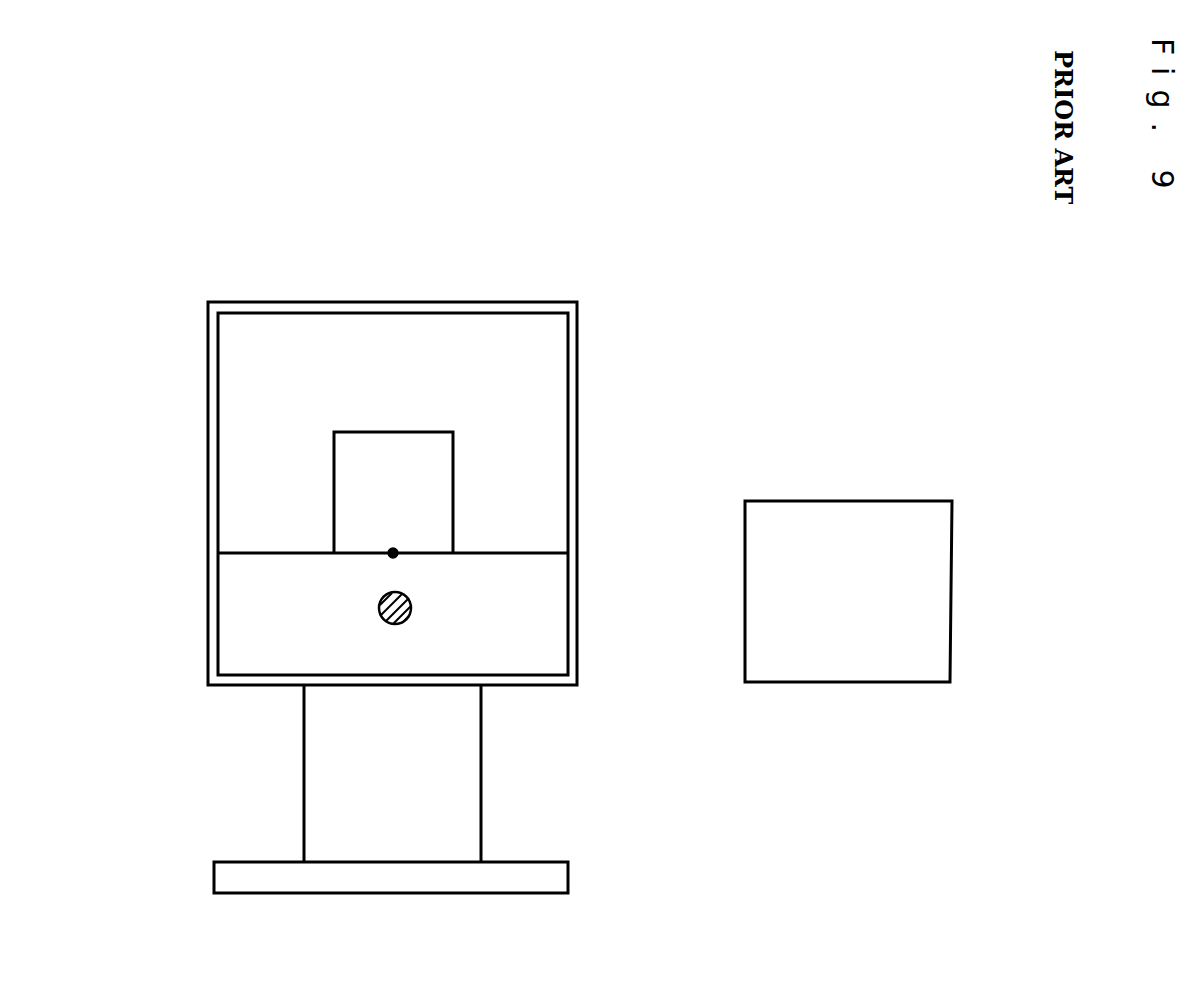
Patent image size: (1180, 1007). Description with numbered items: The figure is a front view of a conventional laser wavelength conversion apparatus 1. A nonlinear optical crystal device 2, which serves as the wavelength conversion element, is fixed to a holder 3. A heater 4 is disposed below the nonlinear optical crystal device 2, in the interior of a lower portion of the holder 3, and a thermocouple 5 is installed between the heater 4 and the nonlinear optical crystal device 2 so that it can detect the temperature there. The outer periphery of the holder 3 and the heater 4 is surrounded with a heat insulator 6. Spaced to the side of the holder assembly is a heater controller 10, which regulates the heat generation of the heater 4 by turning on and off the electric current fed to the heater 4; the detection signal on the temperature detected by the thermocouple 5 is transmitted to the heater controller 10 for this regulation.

The laser wavelength conversion apparatus 1 is at (490, 267).
The nonlinear optical crystal device 2 is at (410, 483).
The holder 3 is at (513, 367).
The heater 4 is at (412, 601).
The thermocouple 5 is at (393, 553).
The heat insulator 6 is at (524, 686).
The heater controller 10 is at (954, 663).